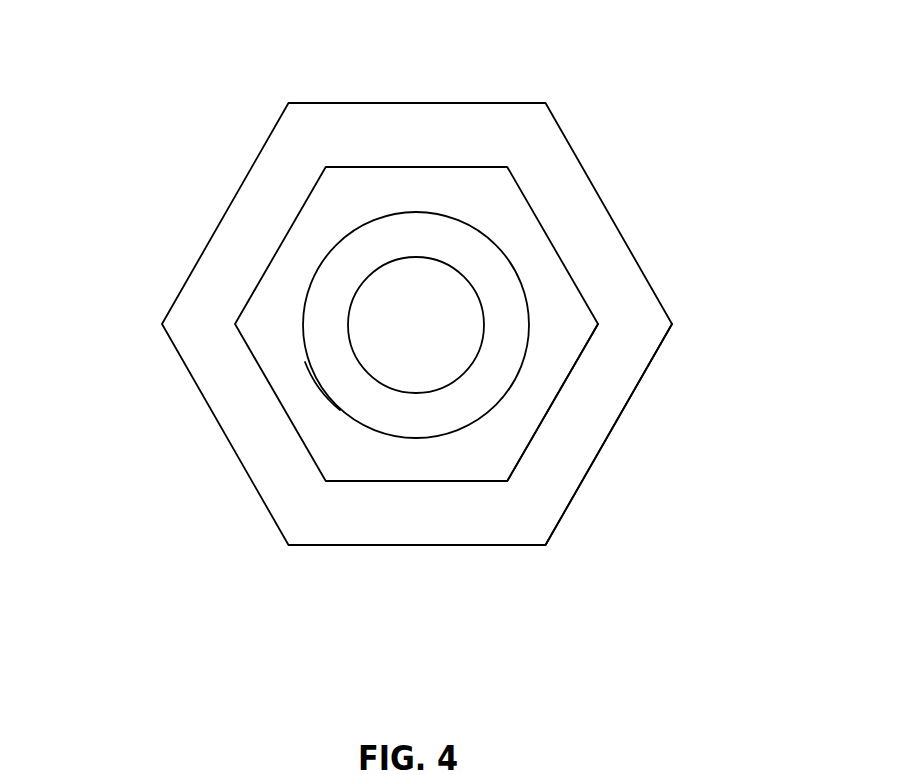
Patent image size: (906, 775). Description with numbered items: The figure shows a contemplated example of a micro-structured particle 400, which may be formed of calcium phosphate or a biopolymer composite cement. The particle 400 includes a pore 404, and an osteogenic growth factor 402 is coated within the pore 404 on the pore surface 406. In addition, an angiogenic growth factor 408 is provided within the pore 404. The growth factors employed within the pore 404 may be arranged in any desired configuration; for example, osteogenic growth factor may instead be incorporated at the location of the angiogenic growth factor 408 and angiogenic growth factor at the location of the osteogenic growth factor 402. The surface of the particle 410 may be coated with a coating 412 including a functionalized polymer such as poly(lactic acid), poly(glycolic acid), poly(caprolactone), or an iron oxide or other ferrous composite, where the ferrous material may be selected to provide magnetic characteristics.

The particle 400 is at (371, 300).
The osteogenic growth factor 402 is at (323, 320).
The pore 404 is at (281, 325).
The pore surface 406 is at (342, 408).
The angiogenic growth factor 408 is at (408, 452).
The surface of the particle 410 is at (646, 402).
The coating 412 is at (643, 434).